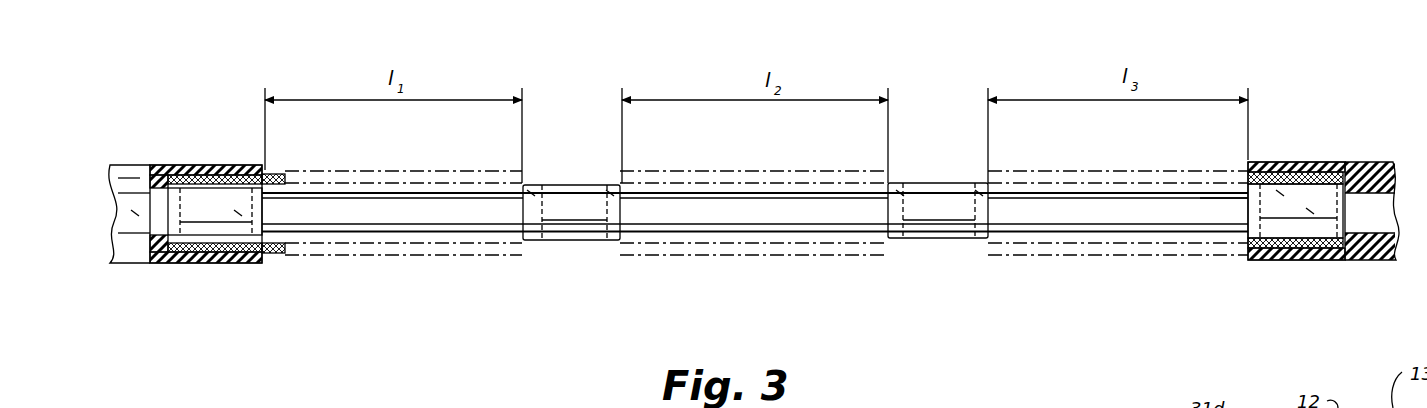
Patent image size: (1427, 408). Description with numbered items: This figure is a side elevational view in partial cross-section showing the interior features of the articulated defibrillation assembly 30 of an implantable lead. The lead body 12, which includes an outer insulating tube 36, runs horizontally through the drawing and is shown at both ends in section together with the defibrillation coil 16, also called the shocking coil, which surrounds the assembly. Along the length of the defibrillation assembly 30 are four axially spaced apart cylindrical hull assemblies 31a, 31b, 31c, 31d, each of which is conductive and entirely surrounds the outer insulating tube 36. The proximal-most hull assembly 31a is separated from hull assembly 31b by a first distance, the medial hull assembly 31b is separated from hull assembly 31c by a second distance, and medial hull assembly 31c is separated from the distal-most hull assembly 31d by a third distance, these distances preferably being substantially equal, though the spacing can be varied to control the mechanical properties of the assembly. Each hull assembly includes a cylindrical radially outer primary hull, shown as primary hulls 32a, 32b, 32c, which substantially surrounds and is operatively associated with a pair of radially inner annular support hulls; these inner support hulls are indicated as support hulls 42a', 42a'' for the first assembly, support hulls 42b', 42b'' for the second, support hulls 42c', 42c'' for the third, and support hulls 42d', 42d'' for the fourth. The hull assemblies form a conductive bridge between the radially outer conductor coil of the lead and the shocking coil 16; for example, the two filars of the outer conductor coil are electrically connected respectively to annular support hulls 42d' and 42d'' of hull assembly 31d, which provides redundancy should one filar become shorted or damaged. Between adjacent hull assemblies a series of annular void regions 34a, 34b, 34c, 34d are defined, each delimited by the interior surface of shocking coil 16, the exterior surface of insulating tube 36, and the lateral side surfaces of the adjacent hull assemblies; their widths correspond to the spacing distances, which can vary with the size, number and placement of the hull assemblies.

The lead body 12 is at (121, 172).
The defibrillation coil 16 is at (186, 172).
The articulated defibrillation assembly 30 is at (525, 342).
The proximal-most hull assembly 31a is at (205, 213).
The medial hull assembly 31b is at (572, 214).
The medial hull assembly 31c is at (934, 210).
The distal-most hull assembly 31d is at (1290, 212).
The primary outer hull 32a is at (266, 208).
The primary outer hull 32b is at (518, 208).
The primary outer hull 32c is at (1000, 208).
The annular void region 34a is at (282, 182).
The annular void region 34b is at (700, 185).
The annular void region 34c is at (1115, 185).
The fourth wire segment 34d is at (1232, 212).
The outer insulating tube 36 is at (412, 212).
The first weld location of sleeve 31a 42a' is at (124, 292).
The second weld location of sleeve 31a 42a'' is at (213, 287).
The first weld location of sleeve 31b 42b' is at (550, 127).
The second weld location of sleeve 31b 42b'' is at (586, 150).
The inner support hull 42c' is at (919, 114).
The inner support hull 42c'' is at (956, 145).
The annular support hull 42d' is at (1309, 122).
The annular support hull 42d'' is at (1341, 273).